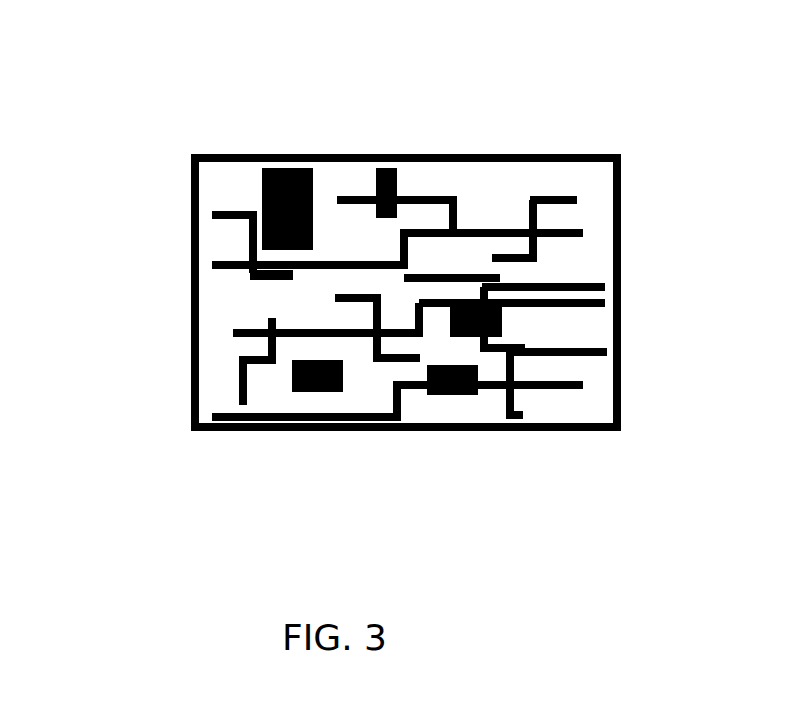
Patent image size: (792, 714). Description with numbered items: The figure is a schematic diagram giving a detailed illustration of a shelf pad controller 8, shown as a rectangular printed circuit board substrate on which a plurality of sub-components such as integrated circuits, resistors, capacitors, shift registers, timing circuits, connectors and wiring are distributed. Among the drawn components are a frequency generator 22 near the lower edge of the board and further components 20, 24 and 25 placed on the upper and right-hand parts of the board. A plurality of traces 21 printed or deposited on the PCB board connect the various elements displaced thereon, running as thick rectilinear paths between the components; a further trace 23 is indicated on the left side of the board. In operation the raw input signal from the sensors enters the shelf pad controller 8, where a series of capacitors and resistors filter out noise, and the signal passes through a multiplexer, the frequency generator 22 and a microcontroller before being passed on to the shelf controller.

The shelf pad controller 8 is at (582, 158).
The electronic component 20 is at (287, 158).
The traces 21 is at (245, 248).
The frequency generator 22 is at (310, 395).
The conductive trace 23 is at (233, 377).
The electronic component 24 is at (387, 158).
The electronic component 25 is at (525, 325).